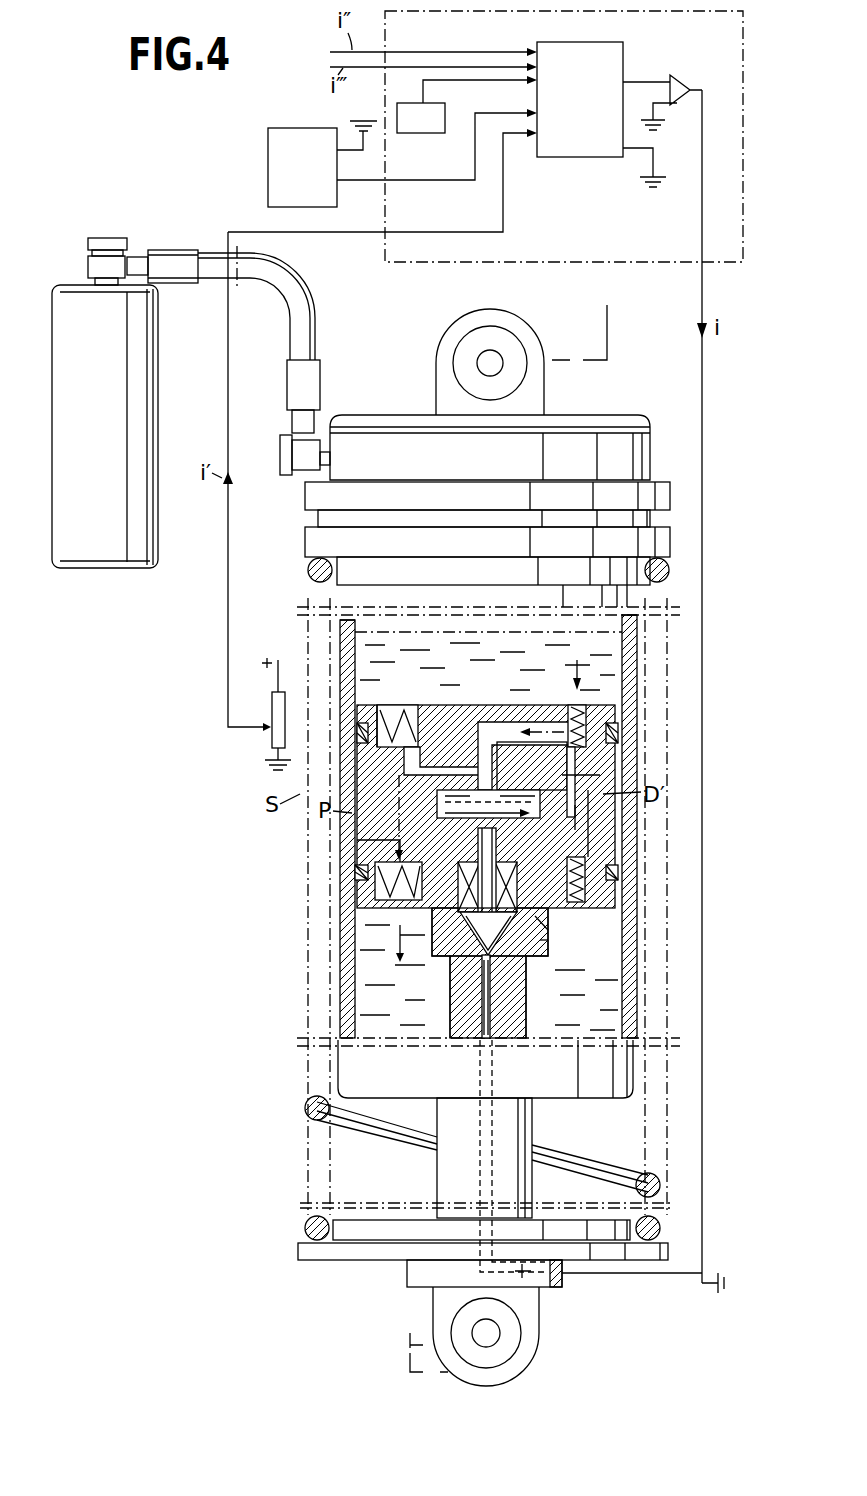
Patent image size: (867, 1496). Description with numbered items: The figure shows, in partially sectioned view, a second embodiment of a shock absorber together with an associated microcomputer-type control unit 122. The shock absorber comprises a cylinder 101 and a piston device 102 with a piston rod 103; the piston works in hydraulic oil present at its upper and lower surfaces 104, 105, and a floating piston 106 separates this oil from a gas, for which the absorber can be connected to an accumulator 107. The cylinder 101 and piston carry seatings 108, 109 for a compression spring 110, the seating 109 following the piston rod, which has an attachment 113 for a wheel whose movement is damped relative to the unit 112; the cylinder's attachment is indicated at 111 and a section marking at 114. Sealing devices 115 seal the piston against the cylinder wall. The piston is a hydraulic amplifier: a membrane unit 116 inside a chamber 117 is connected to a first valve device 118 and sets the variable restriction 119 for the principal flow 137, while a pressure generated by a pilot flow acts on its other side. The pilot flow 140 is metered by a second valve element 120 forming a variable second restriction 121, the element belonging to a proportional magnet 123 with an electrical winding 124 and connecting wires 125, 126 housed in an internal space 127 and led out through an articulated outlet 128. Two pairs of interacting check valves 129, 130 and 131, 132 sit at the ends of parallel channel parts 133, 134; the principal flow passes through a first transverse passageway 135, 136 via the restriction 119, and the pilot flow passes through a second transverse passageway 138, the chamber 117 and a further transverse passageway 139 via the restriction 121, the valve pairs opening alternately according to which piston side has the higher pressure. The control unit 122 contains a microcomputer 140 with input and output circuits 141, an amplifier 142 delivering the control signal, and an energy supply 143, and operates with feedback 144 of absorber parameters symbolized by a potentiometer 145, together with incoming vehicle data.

The cylinder 101 is at (633, 942).
The piston device 102 is at (603, 706).
The piston rod 103 is at (450, 980).
The upper surface of the piston 104 is at (460, 675).
The lower surface of the piston 105 is at (596, 1012).
The floating piston 106 is at (380, 617).
The accumulator 107 is at (155, 397).
The seating 108 is at (663, 542).
The seating 109 is at (377, 1252).
The compression spring 110 is at (305, 1226).
The upper mounting eye 111 is at (437, 347).
The unit 112 is at (598, 348).
The attachment 113 is at (525, 1342).
The section line 114 is at (410, 1340).
The sealing devices 115 is at (619, 737).
The unit (membrane) 116 is at (357, 787).
The chamber 117 is at (562, 774).
The first valve device 118 is at (503, 723).
The variable restriction (throttle valve) 119 is at (442, 755).
The second valve element 120 is at (510, 866).
The variable second restriction (throttle valve) 121 is at (492, 849).
The control unit 122 is at (737, 110).
The proportional magnet 123 is at (443, 914).
The electrical winding 124 is at (532, 929).
The connecting wire 125 is at (492, 1011).
The connecting wire 126 is at (478, 1010).
The internal space 127 is at (560, 947).
The outlet 128 is at (567, 1288).
The check valve arrangement 129 is at (573, 705).
The check valve arrangement 130 is at (357, 875).
The check valve arrangement 131 is at (620, 918).
The check valve arrangement 132 is at (357, 731).
The channel part 133 is at (582, 834).
The channel part 134 is at (390, 852).
The first transverse passageway 135 is at (474, 750).
The first transverse passageway 136 is at (433, 707).
The principal flow 137 is at (393, 705).
The second transverse passageway 138 is at (580, 821).
The transverse passageway 139 is at (455, 902).
The microcomputer 140 is at (617, 53).
The input and output circuits 141 is at (425, 134).
The power adaptation unit (amplifier) 142 is at (680, 80).
The electrical energy supply unit 143 is at (284, 133).
The feedback 144 is at (243, 229).
The potentiometer 145 is at (262, 714).